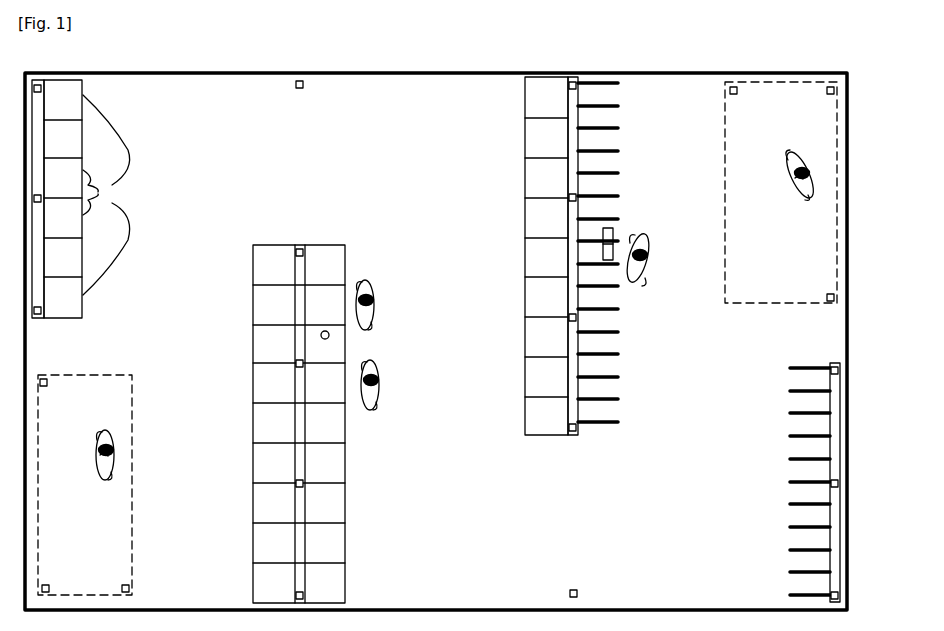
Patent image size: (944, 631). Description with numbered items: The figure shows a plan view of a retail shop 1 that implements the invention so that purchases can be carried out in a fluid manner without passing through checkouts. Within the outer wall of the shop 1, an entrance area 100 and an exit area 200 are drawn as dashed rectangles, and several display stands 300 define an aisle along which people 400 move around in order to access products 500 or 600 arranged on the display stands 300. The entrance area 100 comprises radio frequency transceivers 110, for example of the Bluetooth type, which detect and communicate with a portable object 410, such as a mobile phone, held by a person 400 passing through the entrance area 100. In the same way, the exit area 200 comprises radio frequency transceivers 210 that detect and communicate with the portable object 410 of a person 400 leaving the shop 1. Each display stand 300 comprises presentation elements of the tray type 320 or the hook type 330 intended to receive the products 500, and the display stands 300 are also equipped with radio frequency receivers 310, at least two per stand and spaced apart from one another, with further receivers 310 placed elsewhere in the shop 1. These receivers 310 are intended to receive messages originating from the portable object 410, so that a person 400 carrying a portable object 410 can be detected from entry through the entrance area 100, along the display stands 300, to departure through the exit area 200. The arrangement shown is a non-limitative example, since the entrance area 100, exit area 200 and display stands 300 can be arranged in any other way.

The retail shop 1 is at (847, 170).
The entrance area 100 is at (725, 300).
The radio frequency transceiver 110 is at (827, 91).
The exit area 200 is at (130, 385).
The radio frequency transceiver 210 is at (47, 383).
The display stand 300 is at (45, 320).
The radio frequency receiver 310 is at (302, 90).
The tray type presentation element 320 is at (106, 195).
The hook type presentation element 330 is at (787, 372).
The person 400 is at (378, 385).
The portable object 410 is at (98, 450).
The product 500 is at (325, 330).
The product 600 is at (614, 236).